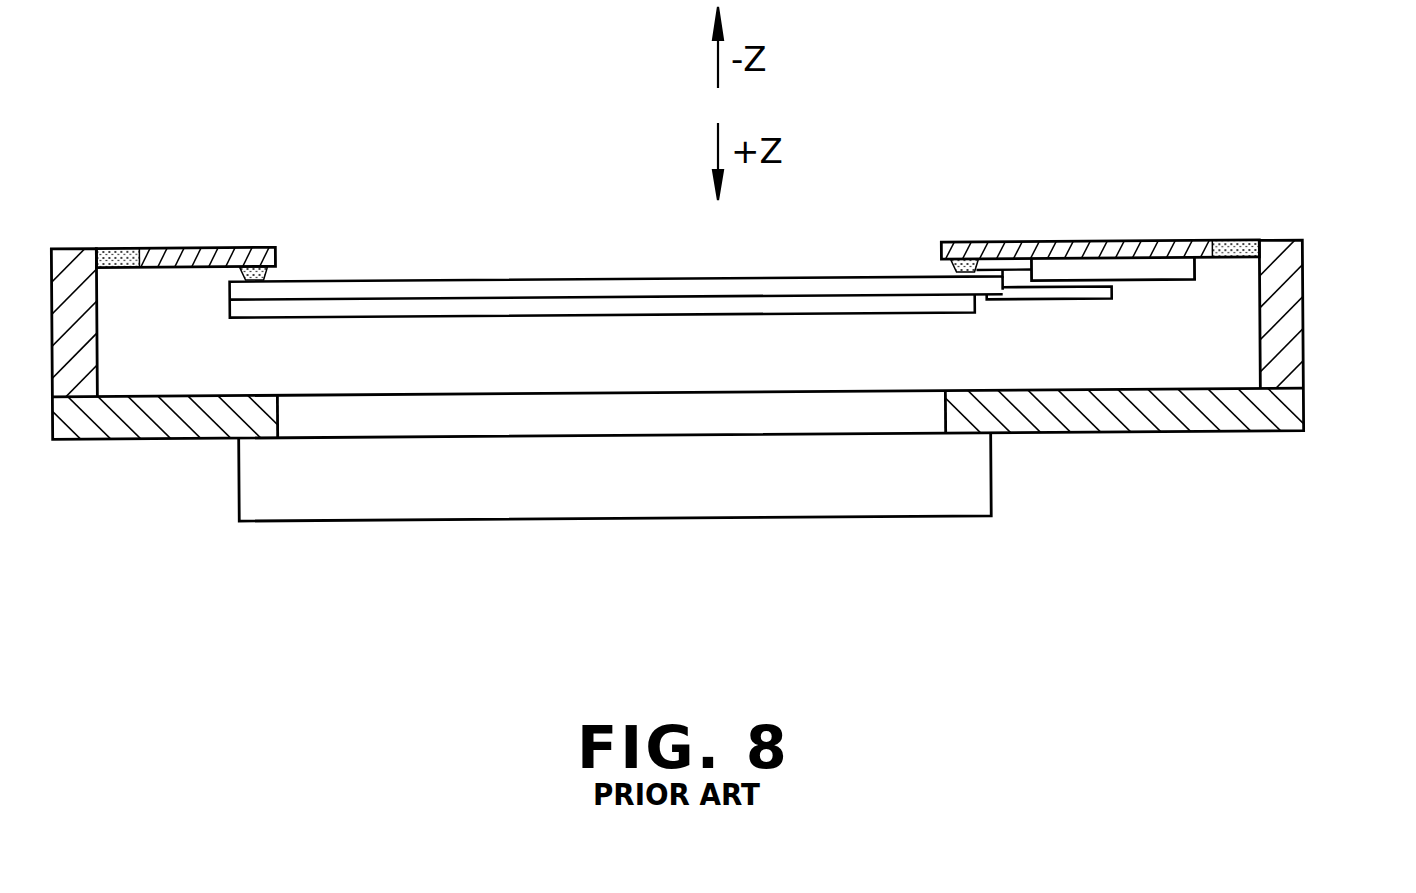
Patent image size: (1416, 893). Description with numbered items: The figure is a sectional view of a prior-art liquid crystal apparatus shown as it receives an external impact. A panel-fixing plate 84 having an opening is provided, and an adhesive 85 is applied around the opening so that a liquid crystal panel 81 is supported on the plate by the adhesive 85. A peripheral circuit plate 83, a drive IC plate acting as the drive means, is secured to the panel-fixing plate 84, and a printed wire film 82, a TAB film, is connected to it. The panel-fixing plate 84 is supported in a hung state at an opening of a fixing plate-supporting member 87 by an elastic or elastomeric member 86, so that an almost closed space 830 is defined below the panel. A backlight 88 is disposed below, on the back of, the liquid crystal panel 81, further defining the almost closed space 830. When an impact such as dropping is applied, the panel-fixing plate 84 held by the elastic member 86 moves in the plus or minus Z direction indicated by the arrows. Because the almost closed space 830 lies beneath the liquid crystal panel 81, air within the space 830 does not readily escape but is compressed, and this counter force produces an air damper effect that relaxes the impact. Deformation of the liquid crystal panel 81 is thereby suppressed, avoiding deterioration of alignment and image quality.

The liquid crystal panel 81 is at (408, 262).
The printed wire film 82 is at (1067, 306).
The peripheral circuit plate 83 is at (1107, 271).
The panel-fixing plate 84 is at (195, 244).
The adhesive 85 is at (967, 242).
The elastic member 86 is at (1235, 246).
The fixing plate-supporting member 87 is at (73, 261).
The backlight 88 is at (392, 493).
The almost closed space 830 is at (1232, 324).